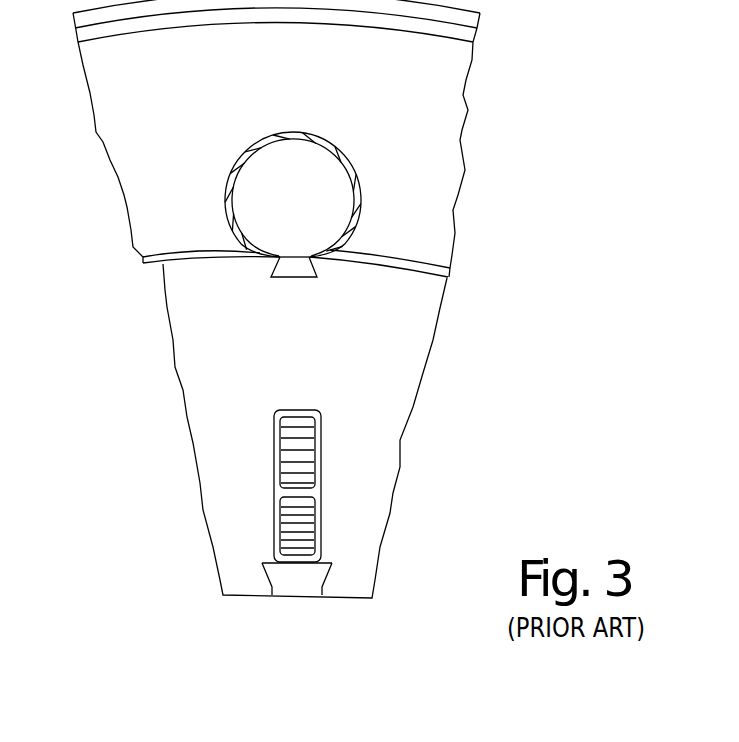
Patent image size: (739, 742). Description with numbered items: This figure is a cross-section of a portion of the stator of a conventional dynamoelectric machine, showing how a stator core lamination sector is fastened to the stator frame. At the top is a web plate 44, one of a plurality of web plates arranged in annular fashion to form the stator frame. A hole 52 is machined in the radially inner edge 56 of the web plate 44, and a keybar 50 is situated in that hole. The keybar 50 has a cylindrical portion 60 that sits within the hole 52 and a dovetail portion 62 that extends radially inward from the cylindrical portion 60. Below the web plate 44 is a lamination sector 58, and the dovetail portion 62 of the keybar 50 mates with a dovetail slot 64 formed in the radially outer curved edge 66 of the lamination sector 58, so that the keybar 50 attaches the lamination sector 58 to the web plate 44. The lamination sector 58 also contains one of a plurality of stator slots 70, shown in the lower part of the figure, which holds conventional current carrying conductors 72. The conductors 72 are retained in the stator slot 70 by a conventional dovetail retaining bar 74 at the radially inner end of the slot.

The web plate 44 is at (132, 115).
The keybar 50 is at (268, 178).
The hole 52 is at (292, 133).
The radially inner edge 56 is at (178, 256).
The lamination sector 58 is at (221, 403).
The cylindrical portion 60 is at (310, 228).
The dovetail portion 62 is at (302, 268).
The dovetail slot 64 is at (282, 279).
The radially outer curved edge 66 is at (418, 277).
The stator slot 70 is at (281, 503).
The conductor 72 is at (316, 470).
The dovetail retaining bar 74 is at (295, 582).